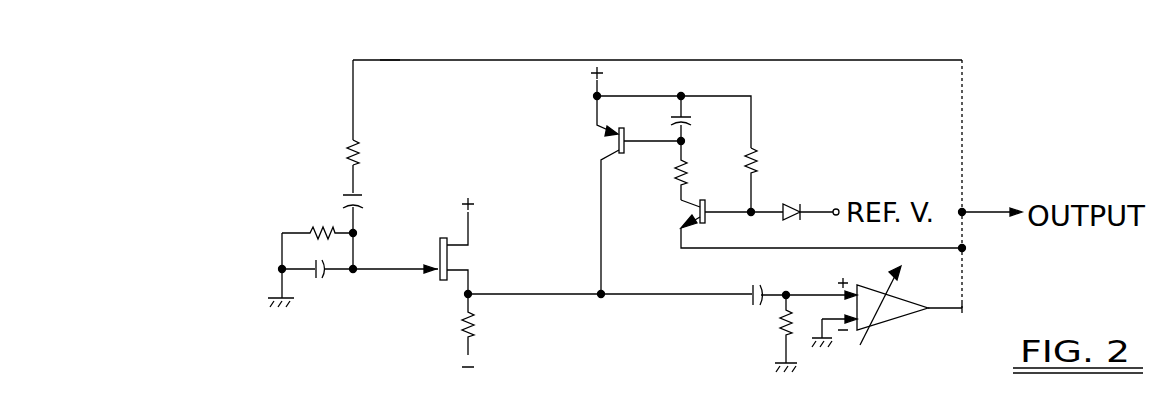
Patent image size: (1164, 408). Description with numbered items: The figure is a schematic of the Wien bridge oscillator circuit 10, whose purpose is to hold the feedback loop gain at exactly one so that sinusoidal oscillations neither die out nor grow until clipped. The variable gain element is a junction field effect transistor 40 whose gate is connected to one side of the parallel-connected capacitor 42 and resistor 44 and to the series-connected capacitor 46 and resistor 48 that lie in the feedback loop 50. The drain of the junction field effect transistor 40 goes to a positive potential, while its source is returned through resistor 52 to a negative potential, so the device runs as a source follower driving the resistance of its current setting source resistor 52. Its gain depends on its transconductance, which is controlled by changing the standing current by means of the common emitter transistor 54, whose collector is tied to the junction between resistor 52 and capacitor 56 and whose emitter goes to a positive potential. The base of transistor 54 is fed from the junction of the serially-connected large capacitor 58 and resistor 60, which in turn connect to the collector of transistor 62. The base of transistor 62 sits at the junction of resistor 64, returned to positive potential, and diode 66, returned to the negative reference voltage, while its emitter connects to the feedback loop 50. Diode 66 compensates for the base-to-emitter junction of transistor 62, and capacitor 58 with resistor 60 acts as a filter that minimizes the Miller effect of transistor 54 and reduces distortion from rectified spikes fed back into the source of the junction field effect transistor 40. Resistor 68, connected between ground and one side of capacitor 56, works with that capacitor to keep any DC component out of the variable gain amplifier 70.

The Wien bridge oscillator circuit 10 is at (262, 110).
The junction field effect transistor 40 is at (444, 282).
The capacitor 42 is at (316, 266).
The resistor 44 is at (312, 233).
The capacitor 46 is at (357, 197).
The resistor 48 is at (360, 151).
The feedback loop 50 is at (388, 60).
The resistor 52 is at (470, 328).
The common emitter transistor 54 is at (610, 148).
The capacitor 56 is at (745, 300).
The large capacitor 58 is at (690, 121).
The resistor 60 is at (690, 168).
The transistor 62 is at (690, 215).
The resistor 64 is at (758, 150).
The diode 66 is at (790, 201).
The resistor 68 is at (780, 330).
The variable gain amplifier 70 is at (885, 320).